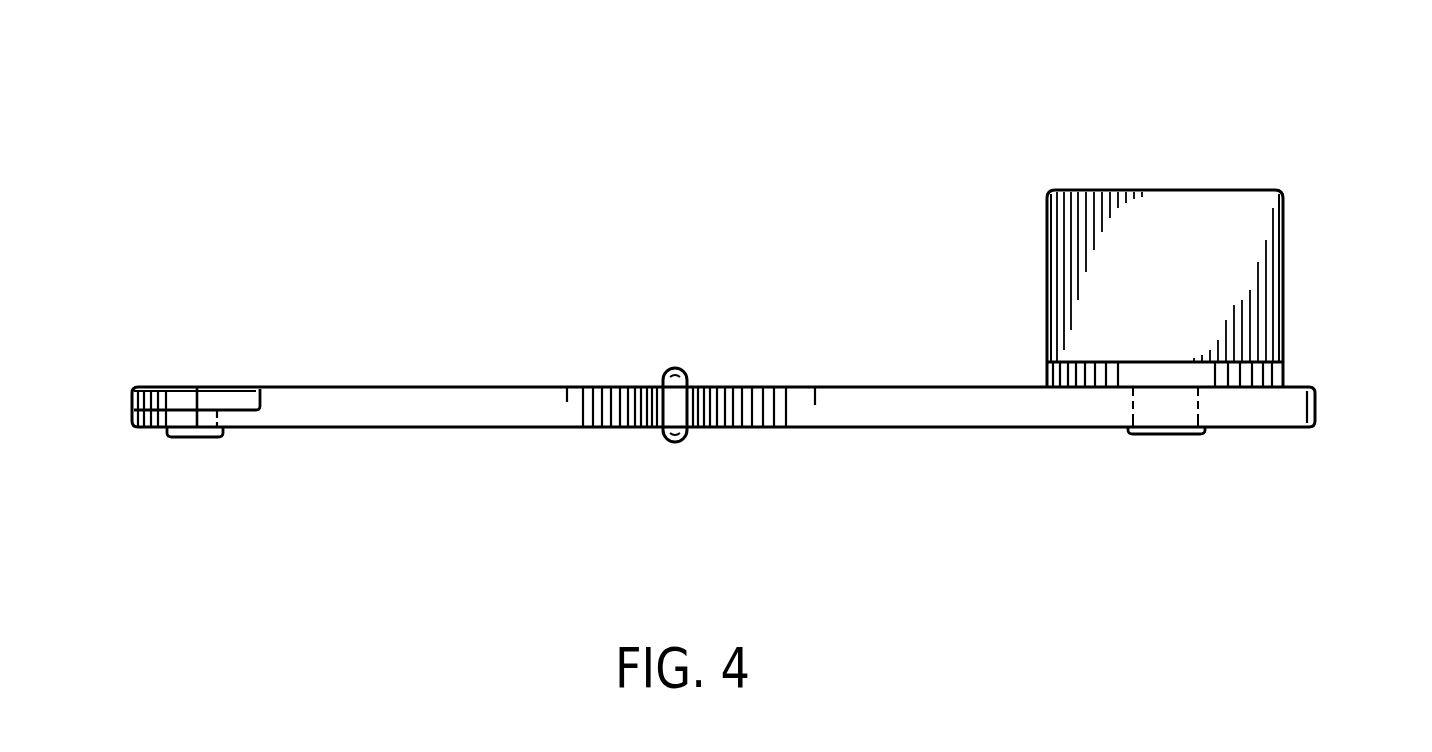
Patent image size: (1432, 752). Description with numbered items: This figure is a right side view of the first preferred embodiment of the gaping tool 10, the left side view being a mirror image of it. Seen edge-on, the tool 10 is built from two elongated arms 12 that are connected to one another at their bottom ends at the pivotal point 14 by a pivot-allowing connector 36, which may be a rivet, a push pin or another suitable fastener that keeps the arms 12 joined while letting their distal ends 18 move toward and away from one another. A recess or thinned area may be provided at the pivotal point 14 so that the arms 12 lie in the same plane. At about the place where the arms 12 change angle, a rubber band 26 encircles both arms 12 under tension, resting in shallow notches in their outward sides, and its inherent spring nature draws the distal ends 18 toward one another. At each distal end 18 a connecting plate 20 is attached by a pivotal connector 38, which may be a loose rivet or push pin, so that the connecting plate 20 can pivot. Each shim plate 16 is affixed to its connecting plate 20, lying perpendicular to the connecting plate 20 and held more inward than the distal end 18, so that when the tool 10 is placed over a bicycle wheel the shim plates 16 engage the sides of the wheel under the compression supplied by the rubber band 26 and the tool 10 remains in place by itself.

The tool 10 is at (672, 215).
The elongated arm 12 is at (401, 387).
The pivotal point 14 is at (186, 387).
The shim plate 16 is at (1164, 210).
The distal end 18 is at (1316, 405).
The connecting plate 20 is at (1285, 370).
The rubber band 26 is at (673, 442).
The connector 36 is at (197, 437).
The pivotal connector 38 is at (1177, 435).